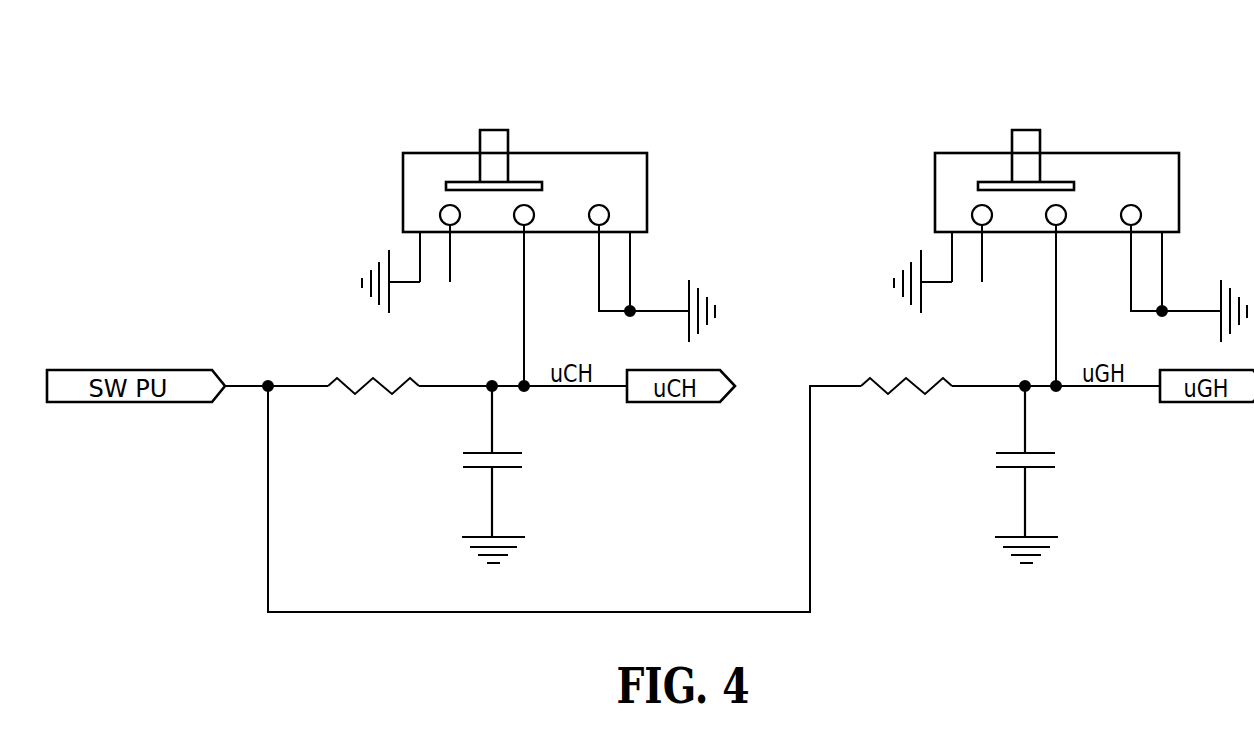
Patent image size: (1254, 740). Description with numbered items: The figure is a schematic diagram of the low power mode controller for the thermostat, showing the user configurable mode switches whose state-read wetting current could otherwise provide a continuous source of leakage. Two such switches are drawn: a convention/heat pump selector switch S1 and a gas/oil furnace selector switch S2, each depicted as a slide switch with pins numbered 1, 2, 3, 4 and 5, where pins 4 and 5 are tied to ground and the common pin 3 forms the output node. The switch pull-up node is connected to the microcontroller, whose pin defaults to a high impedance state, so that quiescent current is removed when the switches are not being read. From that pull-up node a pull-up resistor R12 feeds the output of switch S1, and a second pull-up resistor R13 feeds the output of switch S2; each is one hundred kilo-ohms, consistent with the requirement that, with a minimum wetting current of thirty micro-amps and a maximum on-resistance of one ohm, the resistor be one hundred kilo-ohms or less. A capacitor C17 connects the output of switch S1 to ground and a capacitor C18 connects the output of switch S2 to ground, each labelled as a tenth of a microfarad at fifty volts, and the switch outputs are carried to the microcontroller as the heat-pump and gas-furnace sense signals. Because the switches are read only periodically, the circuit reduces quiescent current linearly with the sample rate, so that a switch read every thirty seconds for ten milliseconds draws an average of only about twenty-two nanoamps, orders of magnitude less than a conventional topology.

The switch S1 (CONV/HEATPUMP selector) S1 is at (523, 137).
The switch S2 (GAS/OIL FURNACE selector) S2 is at (1055, 137).
The resistor R12 is at (373, 386).
The resistor R13, 100K pull-up R13 is at (906, 386).
The capacitor C17, 0.1uF 50V C17 is at (520, 472).
The capacitor C18, 0.1uF 50V C18 is at (1053, 472).
The switch pin 1 is at (701, 257).
The switch pin 2 is at (734, 253).
The switch pin 3 (common output) 3 is at (805, 305).
The switch pin 4 (ground) 4 is at (657, 280).
The switch pin 5 (ground) 5 is at (923, 283).